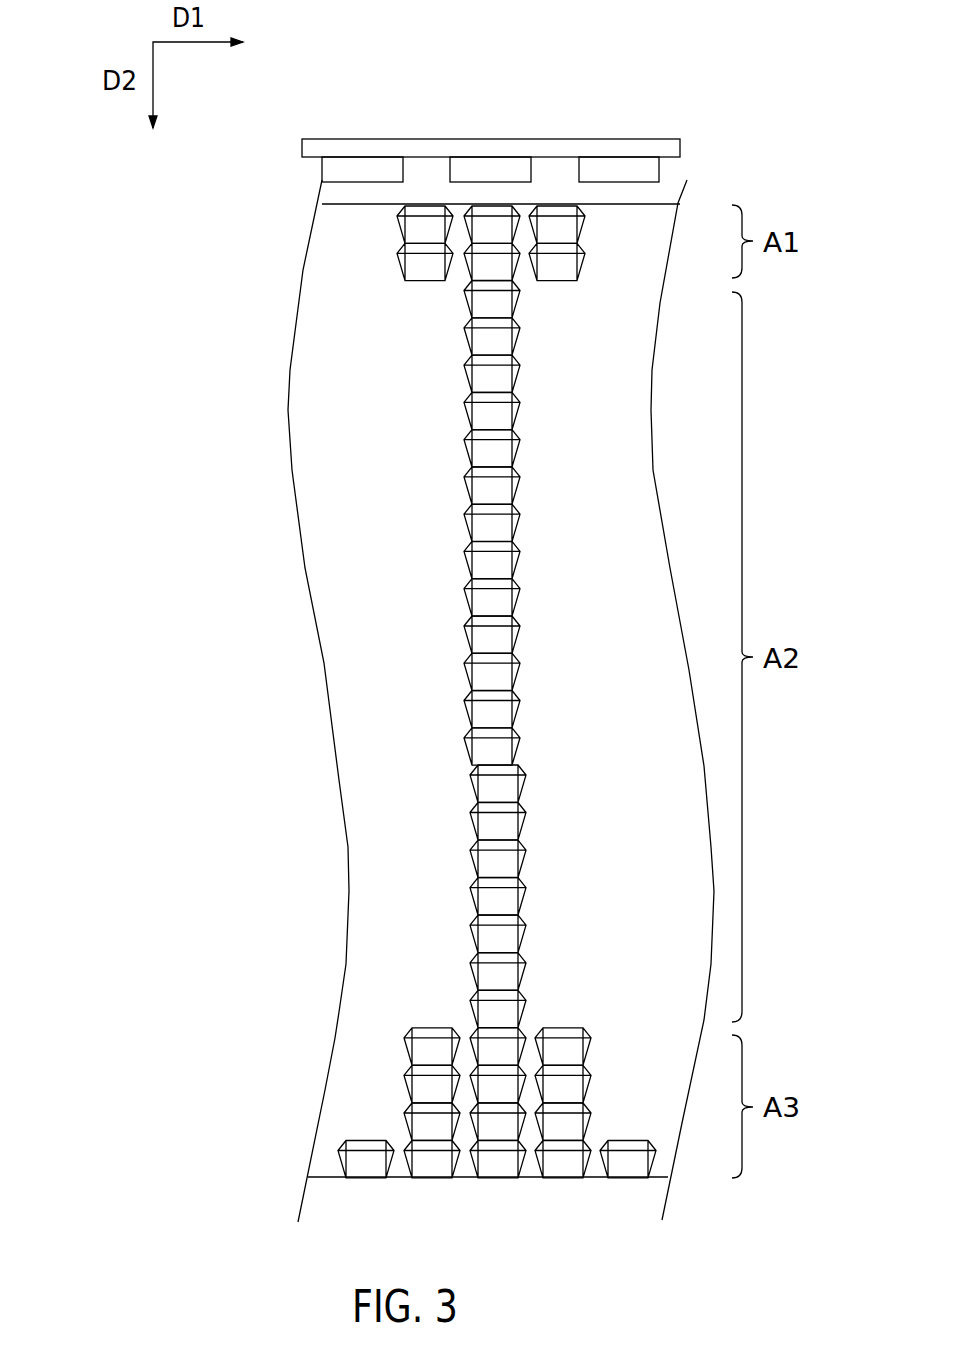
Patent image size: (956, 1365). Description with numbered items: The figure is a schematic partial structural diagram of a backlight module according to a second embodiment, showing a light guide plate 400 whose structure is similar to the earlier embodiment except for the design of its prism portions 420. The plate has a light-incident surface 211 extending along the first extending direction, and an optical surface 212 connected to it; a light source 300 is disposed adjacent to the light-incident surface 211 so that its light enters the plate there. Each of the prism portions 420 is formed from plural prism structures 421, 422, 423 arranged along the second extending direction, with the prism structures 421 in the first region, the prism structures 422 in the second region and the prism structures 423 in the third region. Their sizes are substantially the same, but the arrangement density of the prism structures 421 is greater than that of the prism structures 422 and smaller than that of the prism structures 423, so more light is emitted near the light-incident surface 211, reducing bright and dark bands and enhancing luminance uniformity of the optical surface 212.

The light guide plate 400 is at (288, 233).
The optical surface 212 is at (328, 283).
The light-incident surface 211 is at (547, 199).
The light source 300 is at (622, 168).
The prism portions 420 is at (149, 410).
The prism structures 421 is at (423, 267).
The prism structures 422 is at (490, 638).
The prism structures 423 is at (425, 1048).